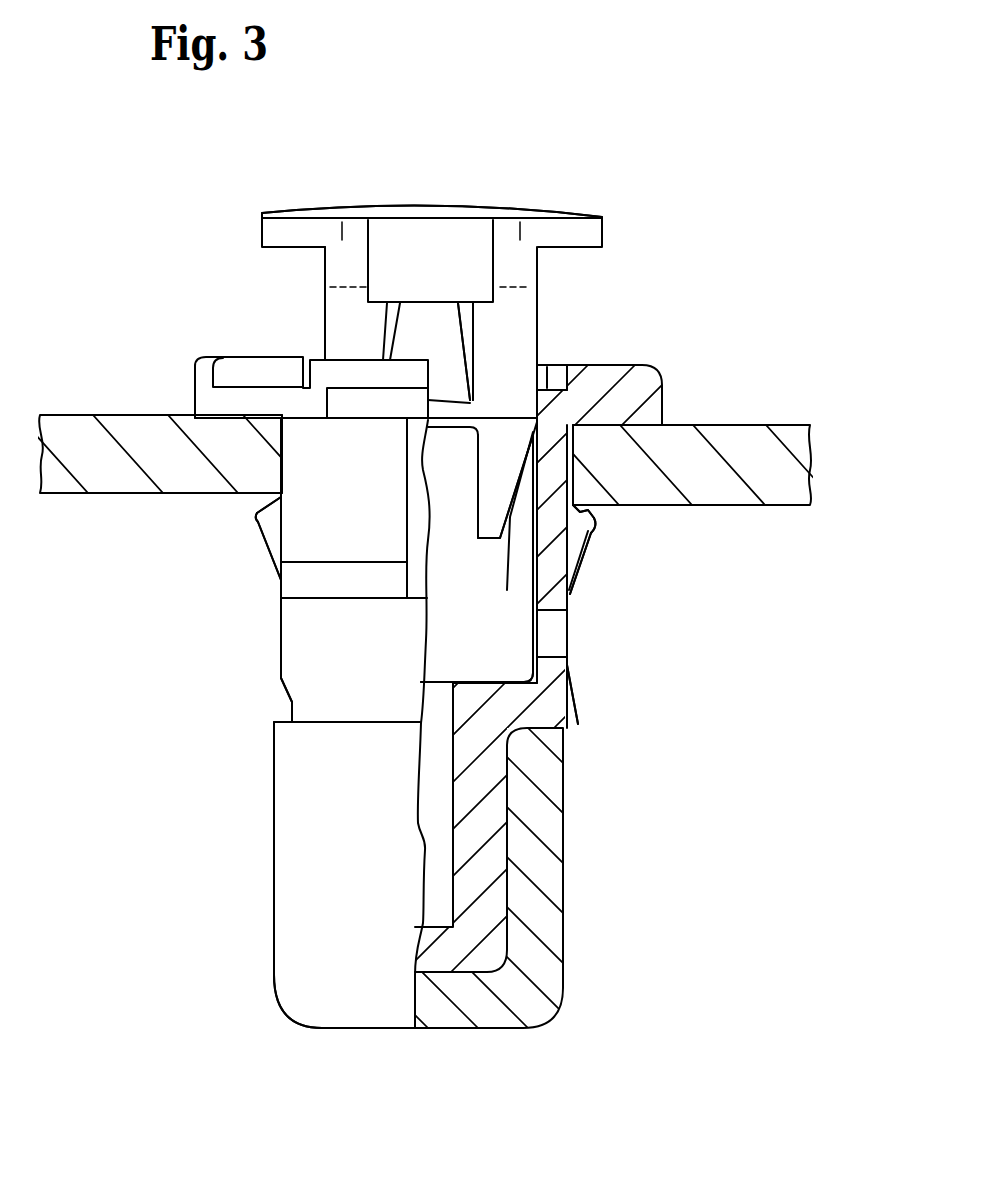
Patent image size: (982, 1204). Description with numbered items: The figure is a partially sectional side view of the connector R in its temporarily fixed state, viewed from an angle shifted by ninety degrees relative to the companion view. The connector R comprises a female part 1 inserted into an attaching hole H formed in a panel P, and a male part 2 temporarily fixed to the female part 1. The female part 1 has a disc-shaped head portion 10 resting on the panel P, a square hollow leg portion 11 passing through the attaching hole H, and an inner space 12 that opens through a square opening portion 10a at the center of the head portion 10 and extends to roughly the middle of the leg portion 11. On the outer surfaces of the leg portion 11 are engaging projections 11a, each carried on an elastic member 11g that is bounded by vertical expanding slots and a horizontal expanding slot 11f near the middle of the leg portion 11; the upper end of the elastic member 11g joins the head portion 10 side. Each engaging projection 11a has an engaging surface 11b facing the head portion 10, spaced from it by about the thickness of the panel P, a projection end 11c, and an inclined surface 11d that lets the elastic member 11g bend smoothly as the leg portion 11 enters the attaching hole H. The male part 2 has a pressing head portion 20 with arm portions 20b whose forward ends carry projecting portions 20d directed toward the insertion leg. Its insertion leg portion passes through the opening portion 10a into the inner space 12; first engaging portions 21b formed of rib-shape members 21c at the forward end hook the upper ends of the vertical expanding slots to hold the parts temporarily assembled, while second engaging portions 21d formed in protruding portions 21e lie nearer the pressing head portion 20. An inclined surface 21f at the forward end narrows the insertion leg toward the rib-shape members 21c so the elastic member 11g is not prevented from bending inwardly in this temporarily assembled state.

The female part 1 is at (562, 953).
The leg portion 11 is at (562, 953).
The male part 2 is at (522, 270).
The head portion 10 is at (657, 367).
The opening portion 10a is at (547, 391).
The engaging projection 11a is at (260, 523).
The engaging surface 11b is at (263, 497).
The projection end 11c is at (255, 518).
The inclined surface 11d is at (272, 558).
The horizontal expanding slot 11f is at (547, 633).
The elastic member 11g is at (557, 460).
The inner space 12 is at (540, 675).
The pressing head portion 20 is at (557, 212).
The arm portion 20b is at (402, 217).
The projecting portion 20d is at (440, 273).
The first engaging portion 21b is at (532, 682).
The rib-shape member 21c is at (532, 682).
The second engaging portion 21d is at (413, 325).
The protruding portion 21e is at (413, 325).
The inclined surface 21f is at (510, 483).
The attaching hole H is at (577, 472).
The panel P is at (783, 480).
The connector R is at (522, 193).